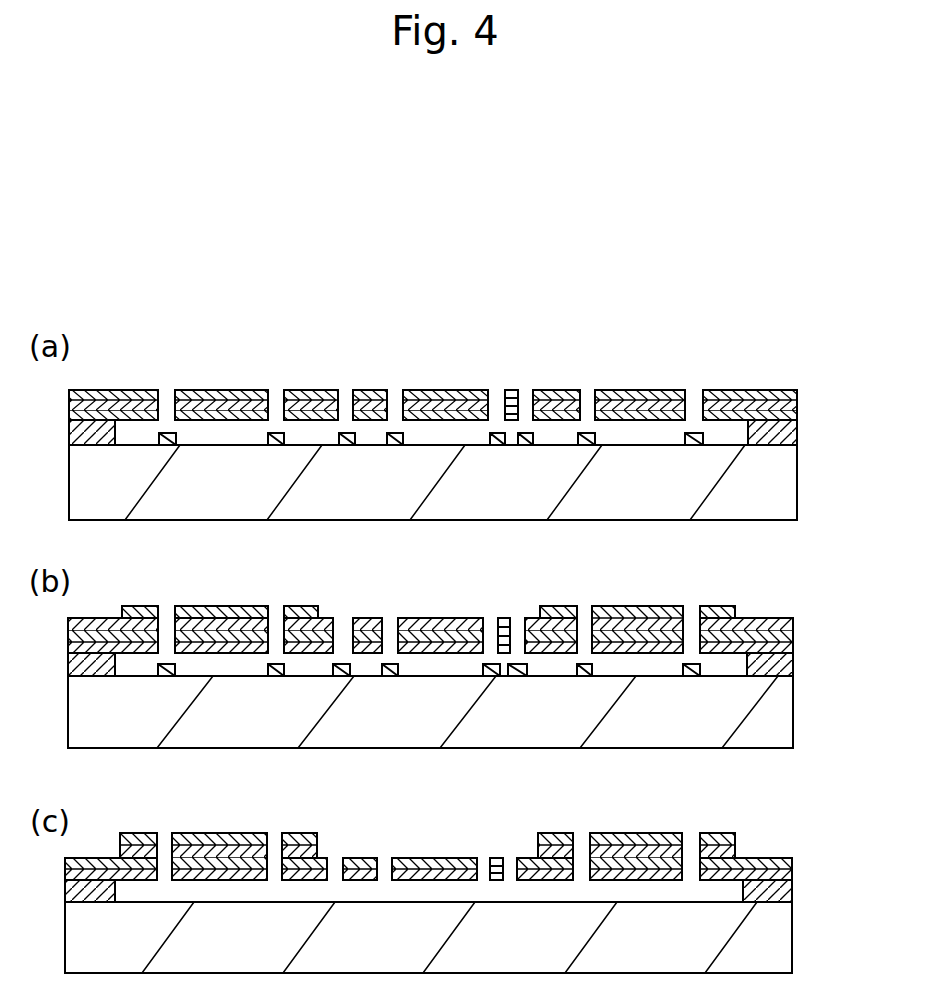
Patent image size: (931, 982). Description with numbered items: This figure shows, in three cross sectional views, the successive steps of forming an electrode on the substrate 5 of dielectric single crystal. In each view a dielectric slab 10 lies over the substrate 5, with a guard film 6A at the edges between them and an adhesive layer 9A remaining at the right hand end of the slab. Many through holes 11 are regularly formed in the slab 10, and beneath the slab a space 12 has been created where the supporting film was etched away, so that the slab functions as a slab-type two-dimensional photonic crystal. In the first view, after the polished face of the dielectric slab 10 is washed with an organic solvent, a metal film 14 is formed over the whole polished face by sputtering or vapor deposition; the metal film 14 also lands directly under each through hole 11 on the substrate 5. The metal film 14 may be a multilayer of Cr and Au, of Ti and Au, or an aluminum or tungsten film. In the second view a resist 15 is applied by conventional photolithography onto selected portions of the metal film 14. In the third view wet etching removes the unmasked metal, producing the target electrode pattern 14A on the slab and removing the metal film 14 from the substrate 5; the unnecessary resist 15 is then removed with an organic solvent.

The substrate 5 is at (787, 508).
The guard film 6A is at (795, 436).
The adhesive layer 9A is at (797, 421).
The dielectric slab 10 is at (655, 408).
The through hole 11 is at (270, 412).
The space 12 is at (510, 396).
The metal film 14 is at (120, 398).
The resist 15 is at (125, 606).
The electrode pattern 14A is at (215, 850).